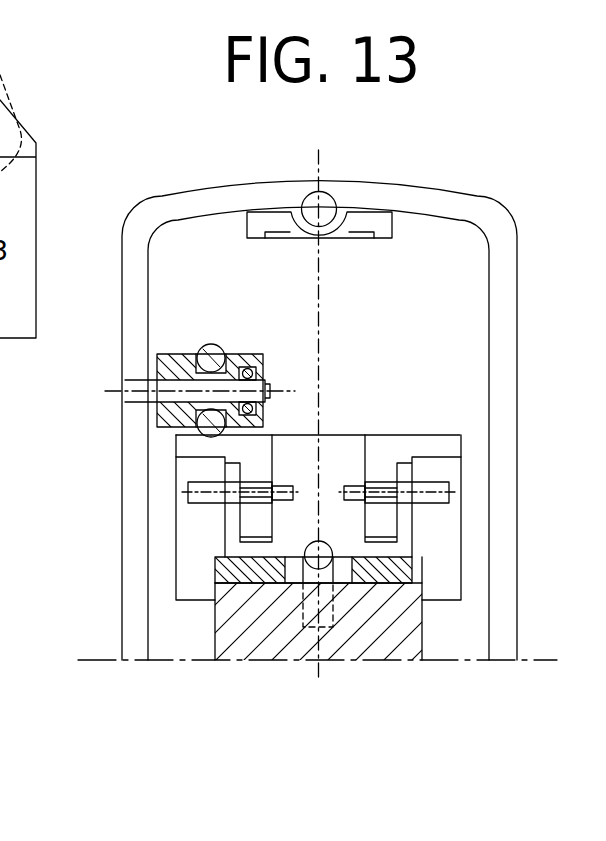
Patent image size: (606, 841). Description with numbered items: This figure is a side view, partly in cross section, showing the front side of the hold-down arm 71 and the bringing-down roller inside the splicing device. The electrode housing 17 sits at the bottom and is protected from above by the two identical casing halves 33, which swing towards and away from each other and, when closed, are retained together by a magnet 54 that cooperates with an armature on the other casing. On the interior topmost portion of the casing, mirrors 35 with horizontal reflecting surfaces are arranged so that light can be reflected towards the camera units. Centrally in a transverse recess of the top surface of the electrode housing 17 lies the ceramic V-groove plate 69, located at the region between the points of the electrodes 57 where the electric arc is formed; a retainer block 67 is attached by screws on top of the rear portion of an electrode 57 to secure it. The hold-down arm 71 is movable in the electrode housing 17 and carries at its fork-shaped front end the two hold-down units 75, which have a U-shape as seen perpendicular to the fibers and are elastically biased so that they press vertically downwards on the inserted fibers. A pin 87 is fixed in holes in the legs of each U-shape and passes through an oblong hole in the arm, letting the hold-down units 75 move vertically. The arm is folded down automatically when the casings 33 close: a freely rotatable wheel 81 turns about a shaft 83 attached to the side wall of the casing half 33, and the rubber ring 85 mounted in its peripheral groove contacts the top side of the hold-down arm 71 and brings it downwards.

The electrode housing 17 is at (214, 640).
The casing halves 33 is at (495, 218).
The mirrors 35 is at (364, 234).
The magnet 54 is at (324, 200).
The electrodes 57 is at (304, 553).
The retainer block 67 is at (307, 333).
The ceramic V-groove plate 69 is at (395, 583).
The hold-down arm 71 is at (393, 447).
The hold-down units 75 is at (404, 519).
The wheel 81 is at (168, 353).
The shaft 83 is at (272, 381).
The rubber ring 85 is at (207, 346).
The pin 87 is at (436, 498).